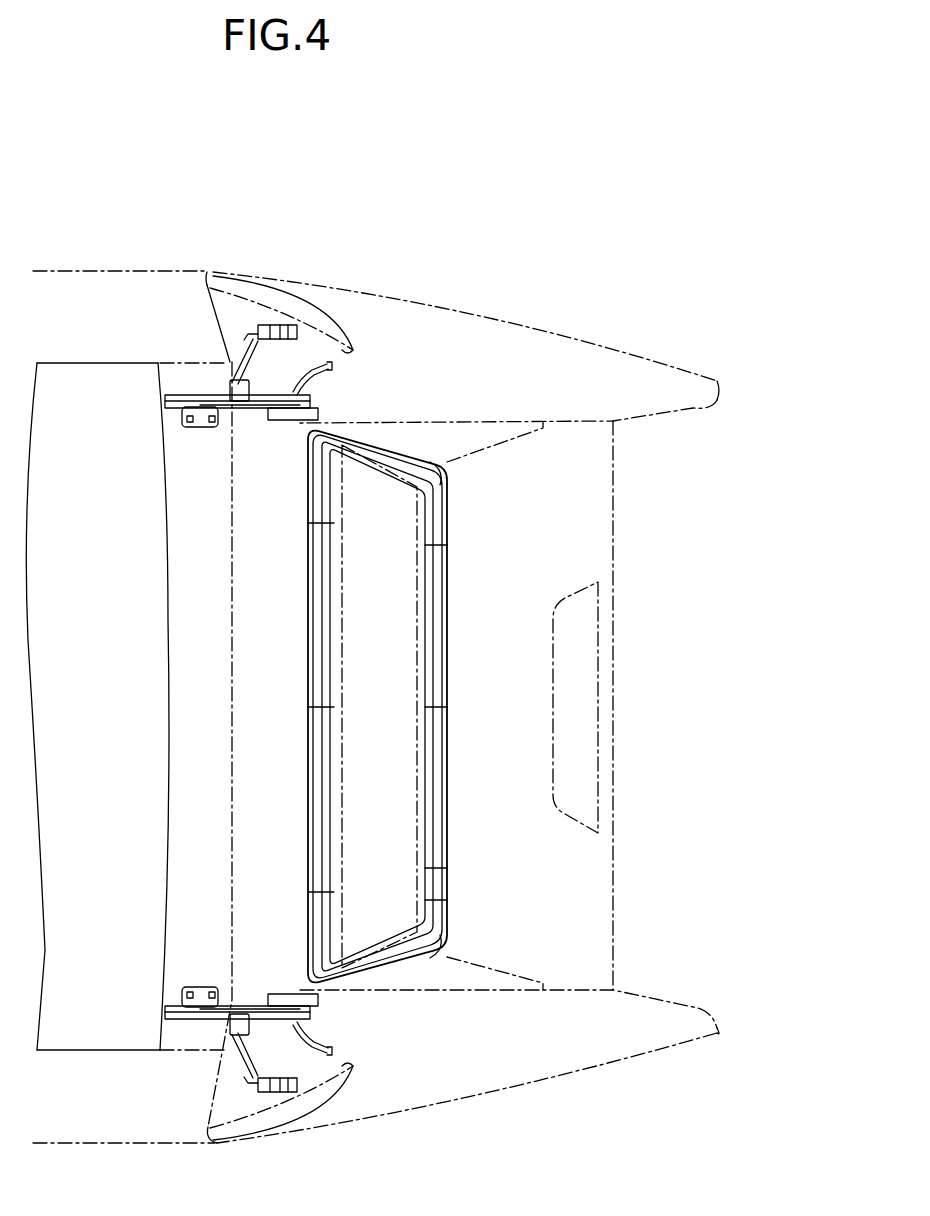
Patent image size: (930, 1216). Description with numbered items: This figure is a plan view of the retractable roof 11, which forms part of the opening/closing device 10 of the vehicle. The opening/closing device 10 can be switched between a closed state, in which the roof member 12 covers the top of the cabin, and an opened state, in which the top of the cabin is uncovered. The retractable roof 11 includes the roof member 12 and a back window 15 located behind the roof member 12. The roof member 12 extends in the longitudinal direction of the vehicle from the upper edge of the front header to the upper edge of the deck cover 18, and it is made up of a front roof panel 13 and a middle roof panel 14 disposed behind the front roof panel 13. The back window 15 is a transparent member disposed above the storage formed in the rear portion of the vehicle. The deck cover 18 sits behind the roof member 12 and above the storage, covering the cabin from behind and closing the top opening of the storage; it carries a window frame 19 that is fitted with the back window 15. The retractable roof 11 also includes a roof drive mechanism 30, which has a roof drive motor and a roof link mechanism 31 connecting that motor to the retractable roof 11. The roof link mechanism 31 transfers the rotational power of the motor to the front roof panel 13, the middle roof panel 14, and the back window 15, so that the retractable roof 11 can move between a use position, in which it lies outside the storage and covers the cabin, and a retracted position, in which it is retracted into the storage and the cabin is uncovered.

The opening/closing device 10 is at (477, 296).
The retractable roof 11 is at (113, 353).
The roof member 12 is at (77, 363).
The front roof panel 13 is at (100, 1022).
The middle roof panel 14 is at (192, 1032).
The back window 15 is at (380, 890).
The deck cover 18 is at (598, 345).
The window frame 19 is at (417, 684).
The roof drive mechanism 30 is at (272, 1096).
The roof link mechanism 31 is at (279, 1027).